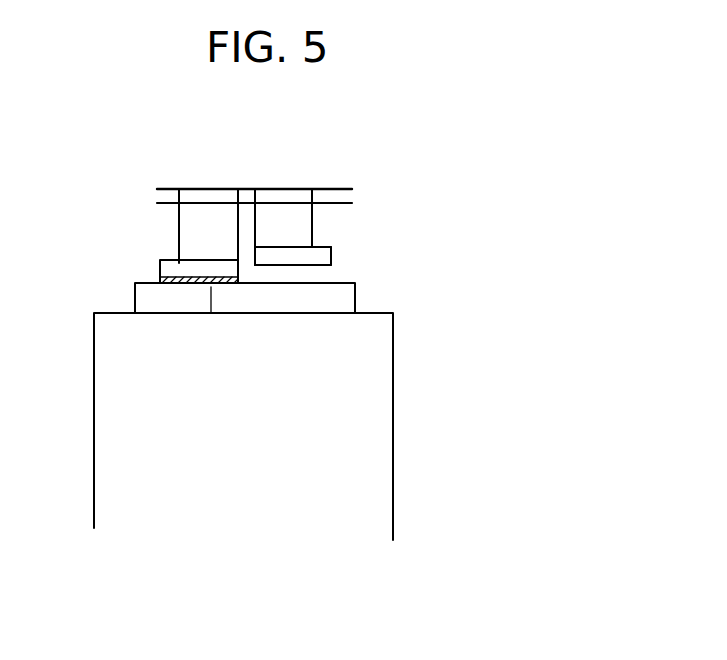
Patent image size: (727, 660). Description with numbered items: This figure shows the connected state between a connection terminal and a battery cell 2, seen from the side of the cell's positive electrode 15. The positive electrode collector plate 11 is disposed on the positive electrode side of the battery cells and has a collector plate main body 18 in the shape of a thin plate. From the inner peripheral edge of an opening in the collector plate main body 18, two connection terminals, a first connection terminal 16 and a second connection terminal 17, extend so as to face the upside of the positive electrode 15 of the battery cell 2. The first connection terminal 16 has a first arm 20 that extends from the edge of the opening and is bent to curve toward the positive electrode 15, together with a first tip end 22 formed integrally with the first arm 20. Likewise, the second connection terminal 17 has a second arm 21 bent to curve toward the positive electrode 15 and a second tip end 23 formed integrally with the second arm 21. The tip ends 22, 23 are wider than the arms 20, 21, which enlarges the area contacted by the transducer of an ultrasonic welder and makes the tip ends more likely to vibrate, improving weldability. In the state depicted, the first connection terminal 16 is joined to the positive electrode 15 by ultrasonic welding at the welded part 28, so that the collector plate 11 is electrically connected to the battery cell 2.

The battery cell 2 is at (394, 417).
The positive electrode collector plate 11 is at (323, 188).
The positive electrode 15 is at (338, 283).
The first connection terminal 16 is at (198, 220).
The second connection terminal 17 is at (305, 224).
The collector plate main body 18 is at (168, 188).
The first arm 20 is at (188, 242).
The second arm 21 is at (272, 215).
The first tip end 22 is at (195, 272).
The second tip end 23 is at (287, 255).
The welded part 28 is at (211, 313).